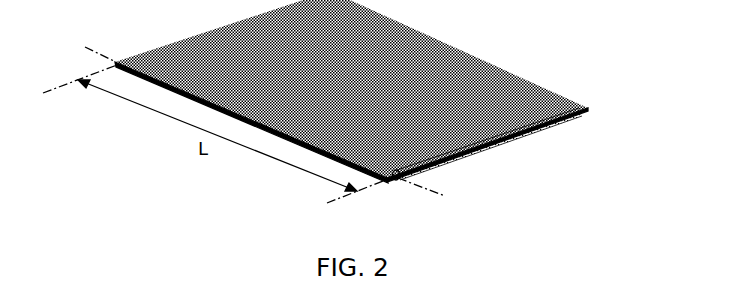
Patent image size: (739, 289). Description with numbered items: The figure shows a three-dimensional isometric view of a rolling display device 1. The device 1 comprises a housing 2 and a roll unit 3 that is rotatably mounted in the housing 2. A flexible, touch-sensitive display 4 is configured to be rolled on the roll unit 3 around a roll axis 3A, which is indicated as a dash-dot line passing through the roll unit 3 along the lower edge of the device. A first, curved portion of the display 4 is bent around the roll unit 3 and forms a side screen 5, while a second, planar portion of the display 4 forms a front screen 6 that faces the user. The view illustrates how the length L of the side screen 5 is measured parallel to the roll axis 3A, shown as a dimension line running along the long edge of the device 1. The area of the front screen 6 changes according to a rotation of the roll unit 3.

The rolling display device 1 is at (330, 110).
The housing 2 is at (498, 139).
The roll unit 3 is at (397, 180).
The roll axis 3A is at (253, 108).
The flexible, touch-sensitive display 4 is at (556, 116).
The side screen 5 is at (167, 88).
The front screen 6 is at (357, 90).